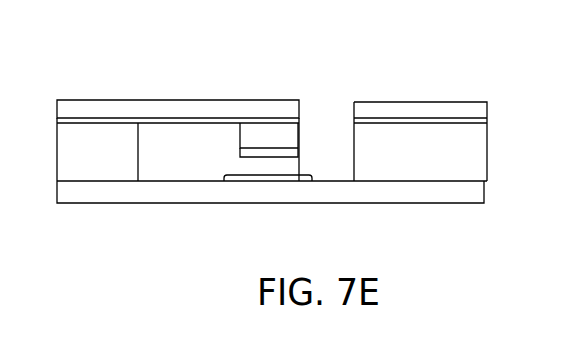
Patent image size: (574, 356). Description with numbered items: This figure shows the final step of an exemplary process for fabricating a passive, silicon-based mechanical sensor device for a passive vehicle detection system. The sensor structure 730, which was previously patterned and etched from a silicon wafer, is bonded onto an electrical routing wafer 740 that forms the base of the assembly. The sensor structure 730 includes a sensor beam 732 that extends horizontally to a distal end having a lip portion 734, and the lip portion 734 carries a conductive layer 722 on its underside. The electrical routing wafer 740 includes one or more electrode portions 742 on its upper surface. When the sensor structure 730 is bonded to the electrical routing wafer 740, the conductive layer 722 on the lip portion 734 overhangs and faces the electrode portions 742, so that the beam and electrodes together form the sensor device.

The sensor structure 730 is at (167, 78).
The sensor beam 732 is at (92, 108).
The lip portion 734 is at (252, 128).
The electrode portions 742 is at (235, 174).
The conductive layer 722 is at (280, 150).
The electrical routing wafer 740 is at (373, 196).